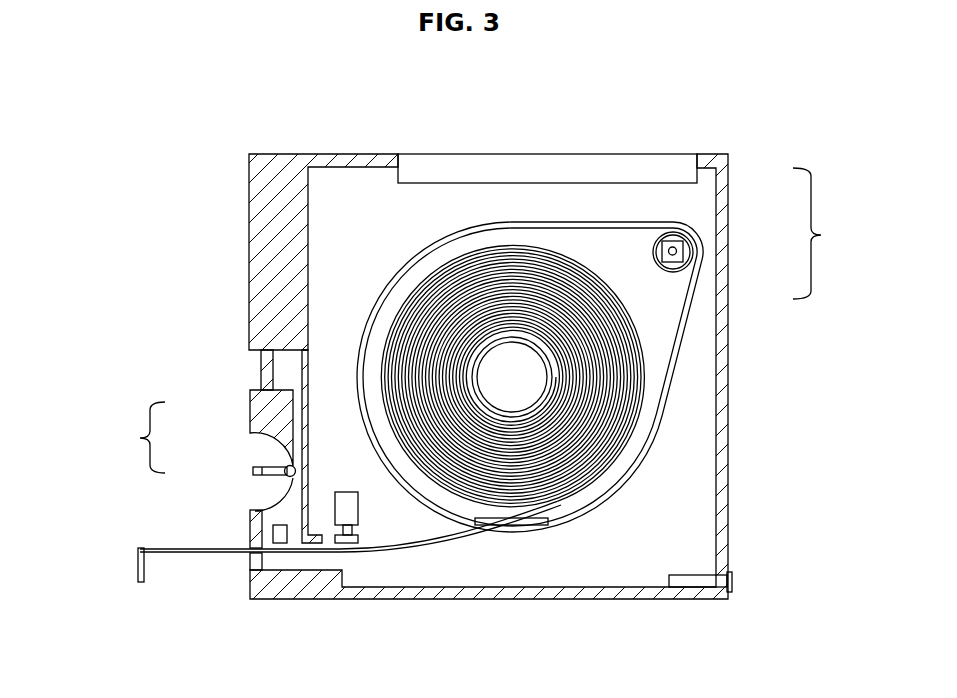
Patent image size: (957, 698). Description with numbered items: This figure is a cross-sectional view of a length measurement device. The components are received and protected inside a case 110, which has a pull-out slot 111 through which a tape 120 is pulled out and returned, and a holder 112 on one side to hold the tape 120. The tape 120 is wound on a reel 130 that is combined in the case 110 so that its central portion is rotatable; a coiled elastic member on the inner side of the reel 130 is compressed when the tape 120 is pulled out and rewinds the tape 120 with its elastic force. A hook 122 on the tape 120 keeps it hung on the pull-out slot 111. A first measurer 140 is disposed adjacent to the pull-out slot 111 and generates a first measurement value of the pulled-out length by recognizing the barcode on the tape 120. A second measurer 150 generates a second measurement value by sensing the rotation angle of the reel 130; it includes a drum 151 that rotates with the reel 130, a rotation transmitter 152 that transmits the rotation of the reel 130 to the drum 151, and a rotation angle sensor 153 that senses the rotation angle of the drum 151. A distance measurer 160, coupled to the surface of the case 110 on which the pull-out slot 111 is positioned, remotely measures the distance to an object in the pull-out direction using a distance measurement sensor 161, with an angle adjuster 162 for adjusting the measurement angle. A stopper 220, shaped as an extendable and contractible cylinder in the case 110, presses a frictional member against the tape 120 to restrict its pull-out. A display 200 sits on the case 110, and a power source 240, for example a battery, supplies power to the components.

The case 110 is at (487, 389).
The pull-out slot 111 is at (250, 565).
The holder 112 is at (268, 200).
The tape 120 is at (349, 434).
The hook 122 is at (137, 566).
The reel 130 is at (648, 410).
The first measurer 140 is at (268, 526).
The second measurer 150 is at (759, 233).
The drum 151 is at (688, 268).
The rotation transmitter 152 is at (690, 225).
The rotation angle sensor 153 is at (683, 251).
The distance measurer 160 is at (194, 450).
The distance measurement sensor 161 is at (253, 470).
The angle adjuster 162 is at (250, 430).
The display 200 is at (545, 166).
The stopper 220 is at (350, 517).
The power source 240 is at (733, 578).